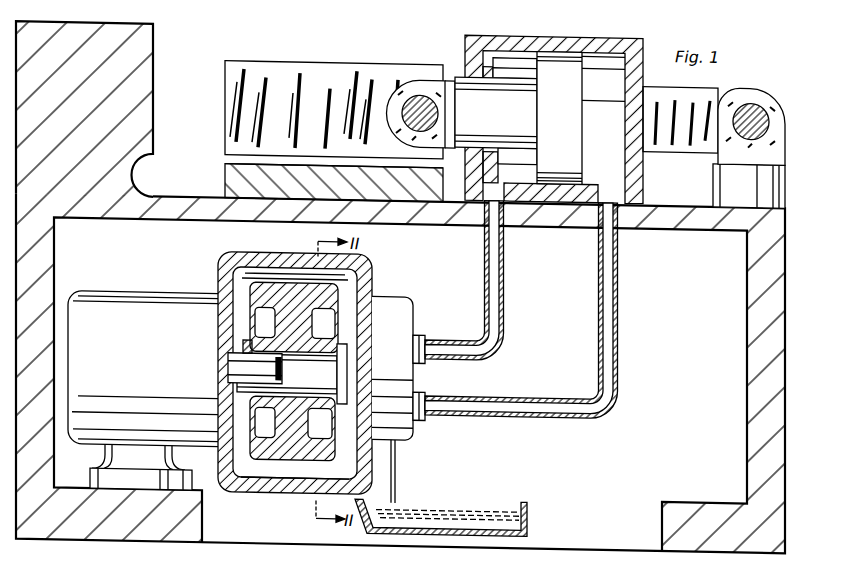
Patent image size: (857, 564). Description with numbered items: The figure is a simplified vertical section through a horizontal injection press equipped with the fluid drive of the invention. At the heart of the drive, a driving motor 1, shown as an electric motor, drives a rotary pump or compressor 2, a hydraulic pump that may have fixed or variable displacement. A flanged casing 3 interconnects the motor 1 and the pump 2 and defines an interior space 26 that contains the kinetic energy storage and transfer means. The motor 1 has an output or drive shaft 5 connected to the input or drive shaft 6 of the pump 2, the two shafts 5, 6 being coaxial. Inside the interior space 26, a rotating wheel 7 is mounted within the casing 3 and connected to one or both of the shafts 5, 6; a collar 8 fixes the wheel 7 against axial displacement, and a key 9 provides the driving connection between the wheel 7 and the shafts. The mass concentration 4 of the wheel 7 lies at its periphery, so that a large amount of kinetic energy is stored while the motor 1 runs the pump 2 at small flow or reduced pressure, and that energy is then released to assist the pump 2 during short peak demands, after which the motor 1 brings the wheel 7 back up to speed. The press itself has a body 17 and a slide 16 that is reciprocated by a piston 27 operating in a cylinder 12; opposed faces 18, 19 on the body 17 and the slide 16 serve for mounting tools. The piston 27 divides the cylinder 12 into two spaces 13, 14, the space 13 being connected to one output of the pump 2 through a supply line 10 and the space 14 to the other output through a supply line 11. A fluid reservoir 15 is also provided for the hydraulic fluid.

The driving motor 1 is at (170, 307).
The rotary pump or compressor 2 is at (400, 300).
The flanged casing 3 is at (282, 260).
The mass concentration 4 is at (243, 259).
The output or drive shaft 5 is at (245, 375).
The input or drive shaft 6 is at (337, 363).
The rotating wheel 7 is at (320, 423).
The collar 8 is at (245, 353).
The key 9 is at (308, 397).
The supply line 10 is at (607, 354).
The supply line 11 is at (503, 301).
The cylinder 12 is at (558, 40).
The space 13 is at (600, 163).
The space 14 is at (518, 70).
The fluid reservoir 15 is at (470, 503).
The slide 16 is at (242, 136).
The body 17 is at (131, 119).
The face 18 is at (153, 54).
The face 19 is at (227, 87).
The interior space 26 is at (257, 470).
The piston 27 is at (470, 140).